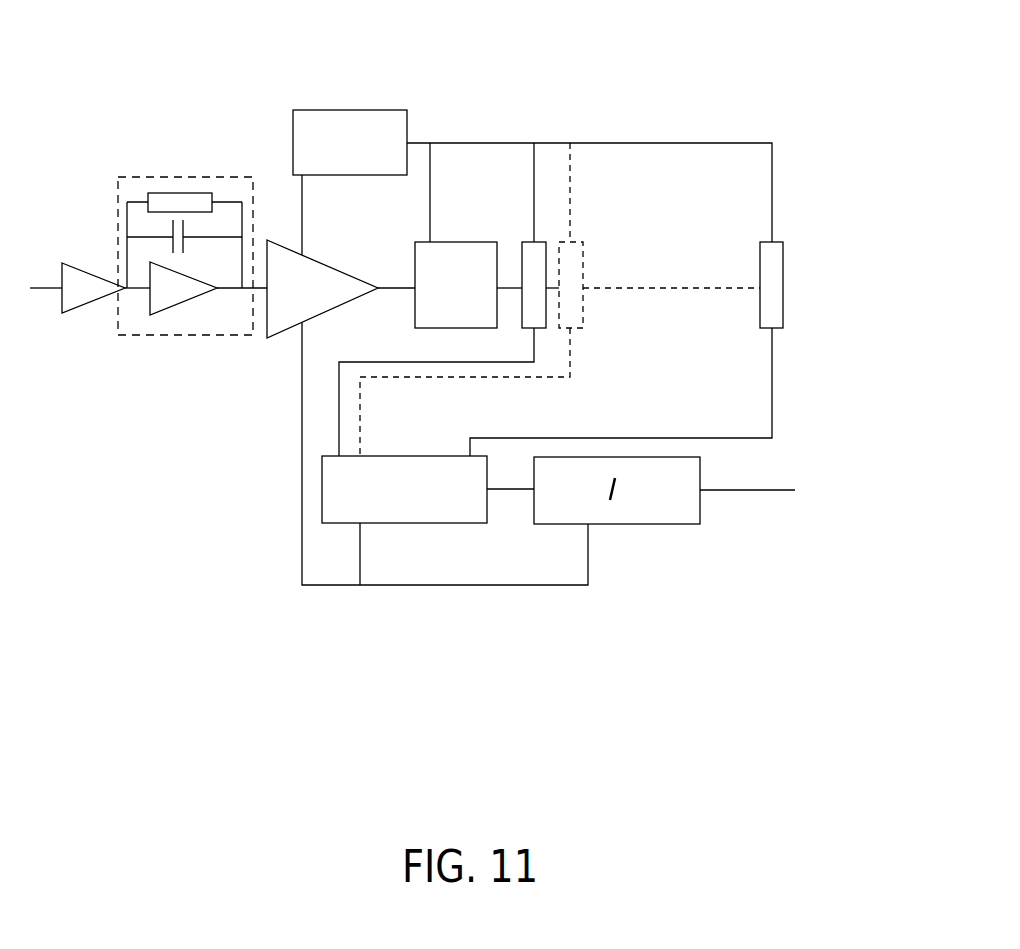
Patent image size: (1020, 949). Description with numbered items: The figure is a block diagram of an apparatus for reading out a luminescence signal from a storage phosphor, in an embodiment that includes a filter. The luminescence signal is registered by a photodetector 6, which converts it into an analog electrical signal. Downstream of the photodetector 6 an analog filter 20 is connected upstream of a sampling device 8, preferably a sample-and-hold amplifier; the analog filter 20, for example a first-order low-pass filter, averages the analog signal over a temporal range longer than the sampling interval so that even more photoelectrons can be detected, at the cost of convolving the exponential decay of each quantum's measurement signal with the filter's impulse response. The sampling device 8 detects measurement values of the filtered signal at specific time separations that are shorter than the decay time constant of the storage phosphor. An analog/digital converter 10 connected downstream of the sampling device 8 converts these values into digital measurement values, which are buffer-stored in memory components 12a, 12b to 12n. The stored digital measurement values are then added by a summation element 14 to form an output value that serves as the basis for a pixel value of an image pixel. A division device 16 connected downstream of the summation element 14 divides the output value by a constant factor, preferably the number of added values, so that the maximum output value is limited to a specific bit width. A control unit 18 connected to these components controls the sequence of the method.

The photodetector 6 is at (70, 317).
The sampling device 8 is at (268, 333).
The analog/digital converter 10 is at (465, 263).
The memory component 12a is at (533, 217).
The memory component 12b is at (580, 243).
The memory component 12n is at (778, 260).
The summation element 14 is at (440, 520).
The division device 16 is at (675, 517).
The control unit 18 is at (352, 118).
The analog filter 20 is at (173, 332).